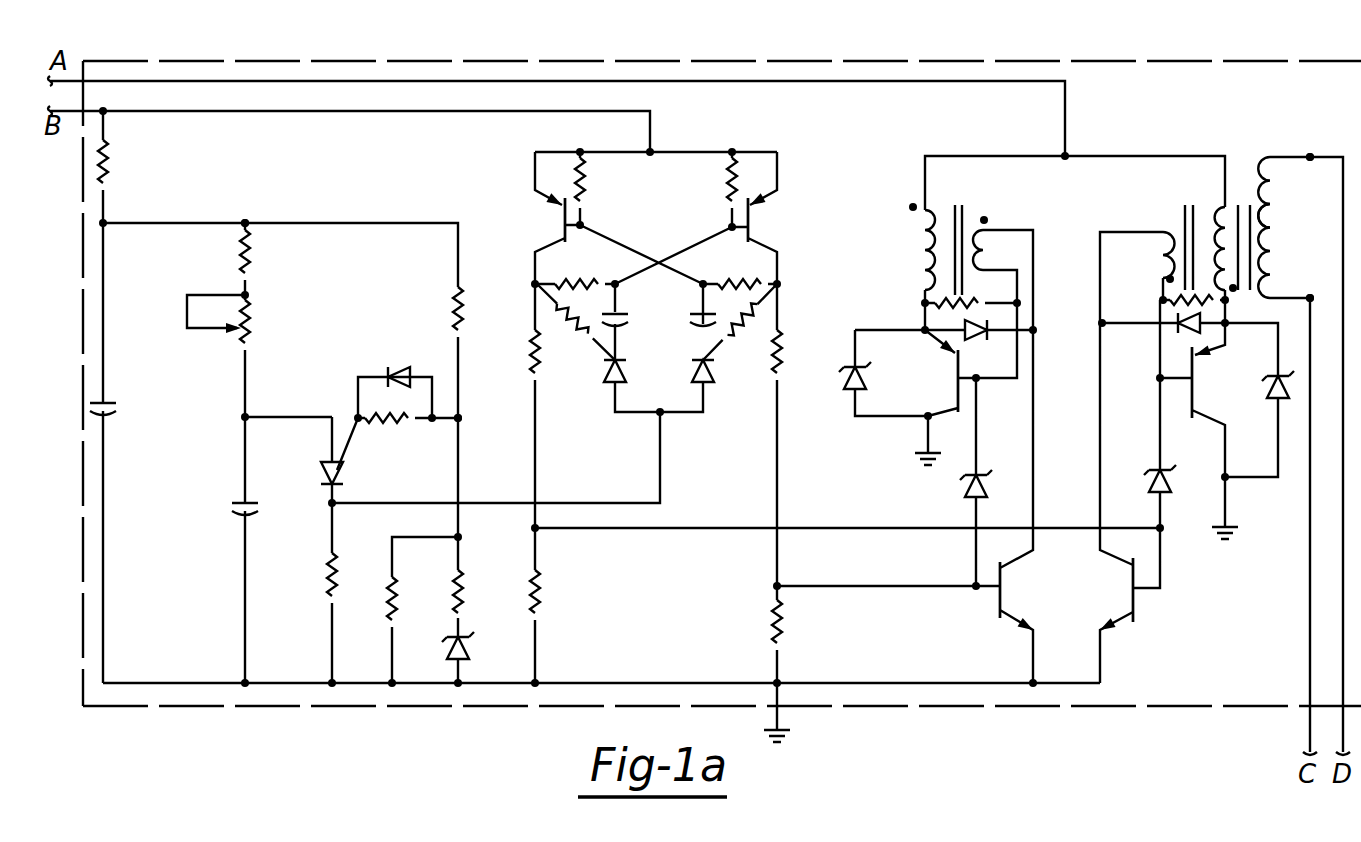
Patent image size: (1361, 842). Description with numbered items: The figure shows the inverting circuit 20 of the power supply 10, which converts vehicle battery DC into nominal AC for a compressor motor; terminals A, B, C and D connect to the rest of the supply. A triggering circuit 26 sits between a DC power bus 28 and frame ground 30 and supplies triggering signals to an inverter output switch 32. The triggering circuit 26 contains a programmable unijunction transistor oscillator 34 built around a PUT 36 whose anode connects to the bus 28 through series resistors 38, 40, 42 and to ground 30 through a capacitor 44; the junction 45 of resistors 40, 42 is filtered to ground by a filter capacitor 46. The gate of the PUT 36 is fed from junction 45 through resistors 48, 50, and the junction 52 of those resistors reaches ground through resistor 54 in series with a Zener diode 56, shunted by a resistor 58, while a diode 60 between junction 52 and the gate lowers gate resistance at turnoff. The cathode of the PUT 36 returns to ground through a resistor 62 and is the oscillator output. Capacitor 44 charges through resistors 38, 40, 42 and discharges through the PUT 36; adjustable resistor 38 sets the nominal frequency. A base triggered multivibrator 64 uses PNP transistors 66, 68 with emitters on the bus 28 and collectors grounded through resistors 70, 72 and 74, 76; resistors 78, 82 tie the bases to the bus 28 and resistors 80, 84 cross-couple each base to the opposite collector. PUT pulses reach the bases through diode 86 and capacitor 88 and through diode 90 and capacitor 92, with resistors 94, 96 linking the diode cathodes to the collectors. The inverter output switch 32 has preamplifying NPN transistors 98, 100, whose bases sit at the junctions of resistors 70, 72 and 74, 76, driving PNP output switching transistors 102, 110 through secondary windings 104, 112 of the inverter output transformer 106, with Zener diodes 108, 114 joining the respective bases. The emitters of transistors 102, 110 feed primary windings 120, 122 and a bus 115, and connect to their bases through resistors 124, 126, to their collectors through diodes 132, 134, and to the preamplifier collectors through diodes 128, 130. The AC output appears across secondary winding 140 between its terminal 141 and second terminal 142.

The power supply 10 is at (540, 12).
The inverting circuit 20 is at (585, 58).
The triggering circuit 26 is at (878, 122).
The DC power bus 28 is at (650, 110).
The frame ground 30 is at (780, 683).
The inverter output switch 32 is at (1230, 131).
The programmable unijunction transistor oscillator 34 is at (455, 153).
The programmable unijunction transistor 36 is at (325, 482).
The resistor 38 is at (250, 340).
The resistor 40 is at (250, 262).
The resistor 42 is at (110, 158).
The capacitor 44 is at (237, 510).
The junction 45 is at (250, 222).
The filter capacitor 46 is at (110, 410).
The resistor 48 is at (390, 420).
The resistor 50 is at (462, 305).
The junction 52 is at (462, 418).
The resistor 54 is at (455, 600).
The Zener diode 56 is at (470, 648).
The resistor 58 is at (388, 597).
The diode 60 is at (412, 372).
The resistor 62 is at (329, 578).
The base triggered multivibrator 64 is at (805, 188).
The first PNP transistor 66 is at (562, 218).
The second PNP transistor 68 is at (752, 238).
The resistor 70 is at (532, 355).
The resistor 72 is at (540, 590).
The resistor 74 is at (780, 340).
The resistor 76 is at (780, 615).
The resistor 78 is at (583, 200).
The resistor 80 is at (740, 265).
The resistor 82 is at (728, 185).
The resistor 84 is at (600, 258).
The diode 86 is at (700, 390).
The capacitor 88 is at (700, 327).
The diode 90 is at (612, 390).
The capacitor 92 is at (620, 318).
The resistor 94 is at (740, 322).
The resistor 96 is at (572, 322).
The first preamplifying NPN transistor 98 is at (1136, 600).
The second preamplifying NPN transistor 100 is at (997, 598).
The PNP output switching transistor 102 is at (1195, 385).
The secondary winding 104 is at (1160, 232).
The inverter output transformer 106 is at (1250, 160).
The Zener diode 108 is at (1153, 480).
The second PNP output switching transistor 110 is at (955, 380).
The secondary winding 112 is at (987, 235).
The Zener diode 114 is at (965, 490).
The bus 115 is at (773, 91).
The primary winding 120 is at (1218, 210).
The primary winding 122 is at (935, 215).
The resistor 124 is at (1162, 292).
The resistor 126 is at (990, 303).
The diode 128 is at (1185, 330).
The diode 130 is at (930, 330).
The diode 132 is at (1268, 400).
The diode 134 is at (852, 392).
The secondary winding 140 is at (1284, 216).
The terminal 141 is at (1287, 178).
The second terminal 142 is at (1300, 296).